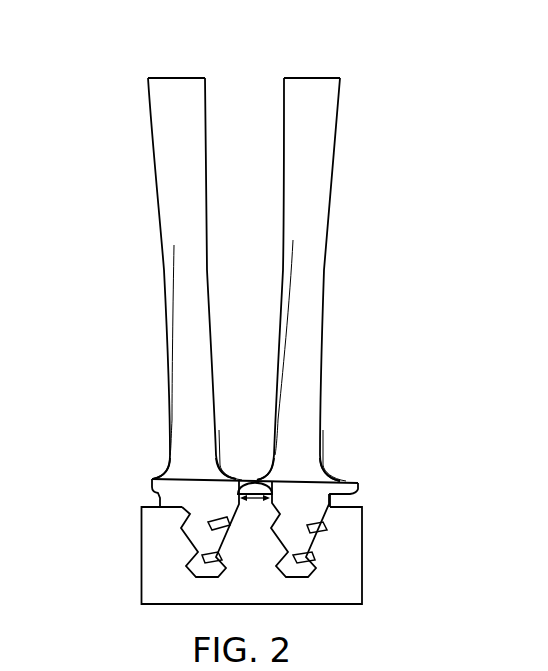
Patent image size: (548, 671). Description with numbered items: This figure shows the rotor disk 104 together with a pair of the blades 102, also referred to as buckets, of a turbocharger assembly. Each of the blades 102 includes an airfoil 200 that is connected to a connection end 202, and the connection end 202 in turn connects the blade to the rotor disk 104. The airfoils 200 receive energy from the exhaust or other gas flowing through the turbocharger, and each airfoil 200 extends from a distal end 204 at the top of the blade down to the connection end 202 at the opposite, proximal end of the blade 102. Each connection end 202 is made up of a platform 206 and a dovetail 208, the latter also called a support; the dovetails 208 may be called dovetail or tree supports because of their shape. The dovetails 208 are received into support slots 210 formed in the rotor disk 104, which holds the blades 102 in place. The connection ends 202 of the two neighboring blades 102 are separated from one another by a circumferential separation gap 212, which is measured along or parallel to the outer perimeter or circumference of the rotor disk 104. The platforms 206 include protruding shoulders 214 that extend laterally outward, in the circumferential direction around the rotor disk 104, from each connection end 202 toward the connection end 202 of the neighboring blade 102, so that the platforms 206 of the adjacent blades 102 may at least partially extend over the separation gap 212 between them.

The blade 102 is at (198, 60).
The rotor disk 104 is at (350, 593).
The airfoil 200 is at (156, 156).
The connection end 202 is at (70, 460).
The distal end 204 is at (151, 60).
The platform 206 is at (130, 462).
The dovetail 208 is at (130, 508).
The support slot 210 is at (340, 555).
The circumferential separation gap 212 is at (255, 503).
The protruding shoulder 214 is at (151, 465).